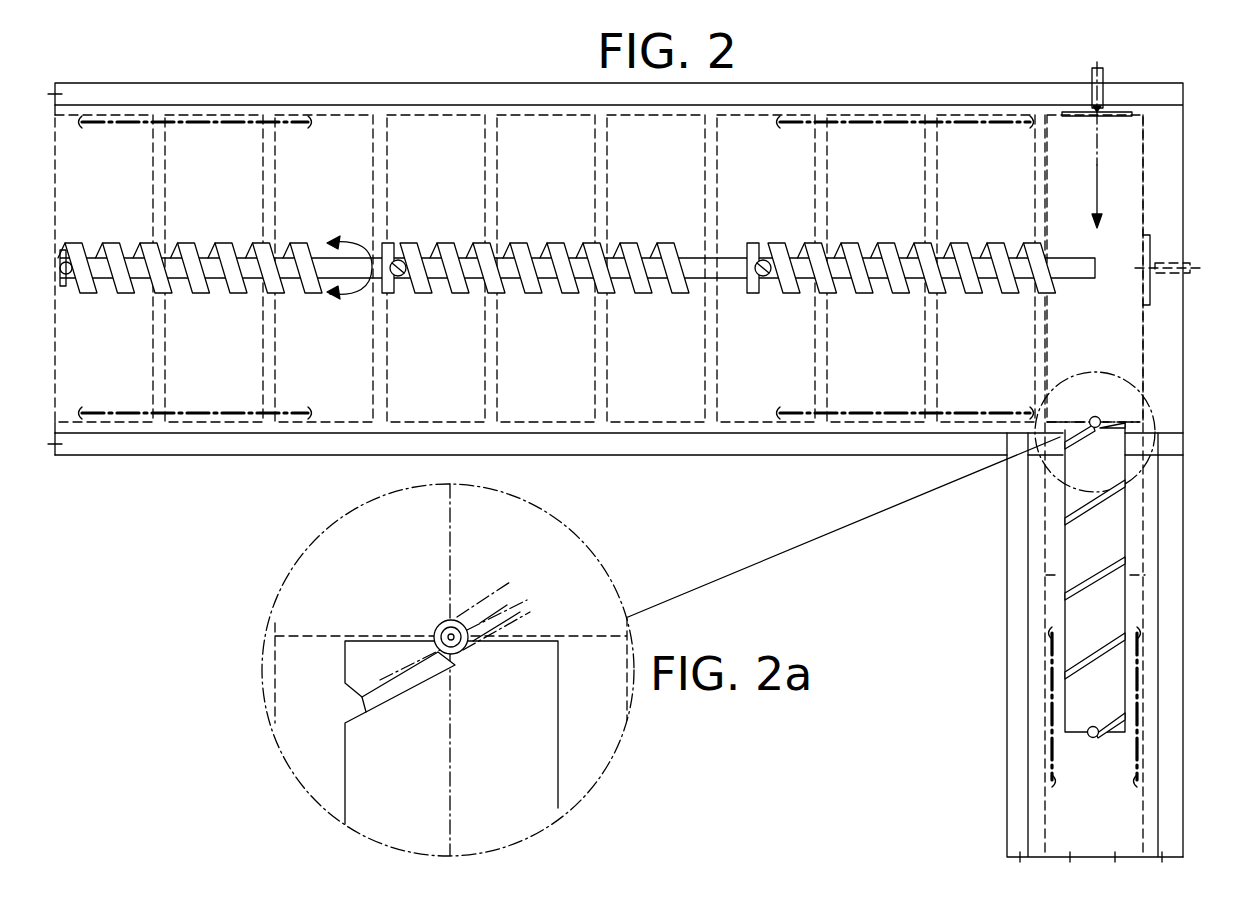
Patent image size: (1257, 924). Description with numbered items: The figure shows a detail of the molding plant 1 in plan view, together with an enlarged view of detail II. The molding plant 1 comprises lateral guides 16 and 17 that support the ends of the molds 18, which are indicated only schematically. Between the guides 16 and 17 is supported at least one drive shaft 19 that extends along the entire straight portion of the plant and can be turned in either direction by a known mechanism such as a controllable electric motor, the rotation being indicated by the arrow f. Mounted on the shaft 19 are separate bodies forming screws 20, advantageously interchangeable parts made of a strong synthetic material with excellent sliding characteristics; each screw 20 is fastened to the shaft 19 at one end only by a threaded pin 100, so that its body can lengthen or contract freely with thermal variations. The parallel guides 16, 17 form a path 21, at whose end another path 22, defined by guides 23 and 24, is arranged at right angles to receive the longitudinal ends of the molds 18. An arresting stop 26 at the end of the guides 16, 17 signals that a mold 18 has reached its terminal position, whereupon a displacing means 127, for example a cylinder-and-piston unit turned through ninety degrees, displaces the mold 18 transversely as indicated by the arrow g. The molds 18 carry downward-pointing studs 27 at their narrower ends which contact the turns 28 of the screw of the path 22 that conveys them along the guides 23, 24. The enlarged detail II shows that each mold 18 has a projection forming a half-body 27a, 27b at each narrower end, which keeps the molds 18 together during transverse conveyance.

In FIG. 2, the molding plant 1 is at (257, 461).
In FIG. 2, the lateral guide 16 is at (207, 117).
In FIG. 2, the lateral guide 17 is at (207, 421).
In FIG. 2, the mold 18 is at (340, 405).
In FIG. 2A, the mold 18 is at (340, 565).
In FIG. 2, the drive shaft 19 is at (732, 276).
In FIG. 2, the screw 20 is at (660, 276).
In FIG. 2, the path 21 is at (525, 370).
In FIG. 2, the path 22 is at (1036, 600).
In FIG. 2, the guide 23 is at (1050, 760).
In FIG. 2, the guide 24 is at (1140, 740).
In FIG. 2, the arresting stop 26 is at (1152, 243).
In FIG. 2, the stud 27 is at (1098, 417).
In FIG. 2A, the half-body 27a is at (438, 621).
In FIG. 2A, the half-body 27b is at (470, 660).
In FIG. 2, the turn 28 is at (1085, 504).
In FIG. 2, the threaded pin 100 is at (394, 258).
In FIG. 2, the displacing means 127 is at (1097, 88).
In FIG. 2, the arrow f is at (352, 238).
In FIG. 2, the arrow g is at (1096, 197).
In FIG. 2, the detail II is at (1115, 358).